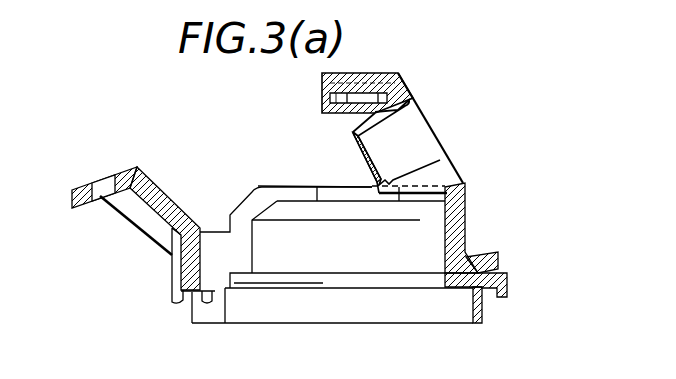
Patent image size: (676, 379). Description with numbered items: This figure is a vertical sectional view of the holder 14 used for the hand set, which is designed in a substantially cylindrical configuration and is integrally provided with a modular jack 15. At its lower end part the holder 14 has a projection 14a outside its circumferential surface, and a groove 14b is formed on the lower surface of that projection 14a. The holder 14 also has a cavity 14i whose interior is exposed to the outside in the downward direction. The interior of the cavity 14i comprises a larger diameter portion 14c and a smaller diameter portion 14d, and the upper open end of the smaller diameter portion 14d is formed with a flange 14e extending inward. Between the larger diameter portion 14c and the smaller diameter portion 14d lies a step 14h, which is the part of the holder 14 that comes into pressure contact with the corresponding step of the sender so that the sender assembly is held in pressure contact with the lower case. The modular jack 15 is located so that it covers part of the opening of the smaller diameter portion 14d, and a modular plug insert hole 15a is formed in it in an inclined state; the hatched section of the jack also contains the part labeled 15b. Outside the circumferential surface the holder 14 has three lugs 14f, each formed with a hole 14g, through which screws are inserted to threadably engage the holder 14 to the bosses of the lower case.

The holder 14 is at (172, 113).
The projection 14a is at (171, 285).
The groove 14b is at (186, 301).
The larger diameter portion 14c is at (474, 305).
The smaller diameter portion 14d is at (445, 232).
The flange 14e is at (300, 190).
The lug 14f is at (170, 186).
The hole 14g is at (103, 182).
The step 14h is at (443, 286).
The cavity 14i is at (323, 294).
The modular jack 15 is at (388, 73).
The modular plug insert hole 15a is at (372, 133).
The pin 15b is at (331, 96).